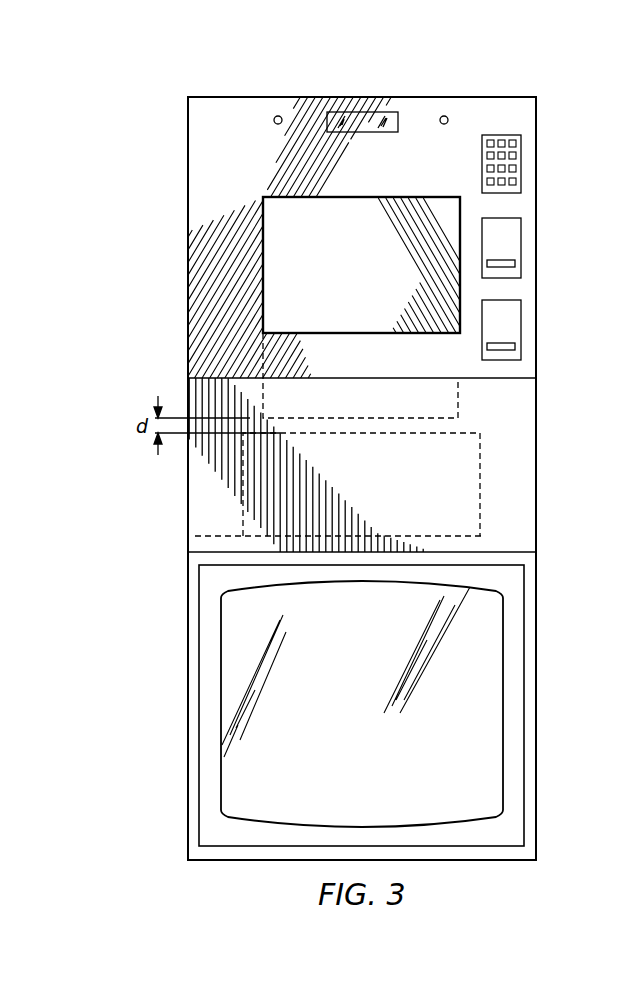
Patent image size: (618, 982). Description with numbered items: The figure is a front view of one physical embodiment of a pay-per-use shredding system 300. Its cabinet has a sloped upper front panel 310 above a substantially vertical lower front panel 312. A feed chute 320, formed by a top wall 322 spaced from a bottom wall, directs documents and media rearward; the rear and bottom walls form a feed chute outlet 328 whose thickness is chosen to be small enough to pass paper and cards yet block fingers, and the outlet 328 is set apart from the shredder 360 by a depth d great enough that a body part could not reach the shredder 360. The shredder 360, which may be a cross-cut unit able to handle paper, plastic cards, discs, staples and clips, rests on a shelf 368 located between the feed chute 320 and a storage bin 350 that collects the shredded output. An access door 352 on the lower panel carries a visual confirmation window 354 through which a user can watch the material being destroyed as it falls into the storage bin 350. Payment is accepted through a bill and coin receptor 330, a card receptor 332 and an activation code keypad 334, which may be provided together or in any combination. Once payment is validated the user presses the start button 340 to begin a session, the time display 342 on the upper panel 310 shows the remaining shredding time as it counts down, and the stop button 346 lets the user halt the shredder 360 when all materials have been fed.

The shredding system 300 is at (104, 135).
The upper front panel 310 is at (190, 178).
The lower front panel 312 is at (193, 527).
The feed chute 320 is at (264, 291).
The top wall 322 is at (361, 265).
The feed chute outlet 328 is at (458, 418).
The bill/coin receptor 330 is at (521, 312).
The credit/debit/bank card receptor 332 is at (521, 230).
The activation code input keypad 334 is at (521, 156).
The start button 340 is at (276, 116).
The time display 342 is at (350, 111).
The stop button 346 is at (446, 116).
The storage bin 350 is at (520, 552).
The access door 352 is at (514, 600).
The visual confirmation window 354 is at (493, 632).
The shredder 360 is at (480, 478).
The shelf 368 is at (497, 536).